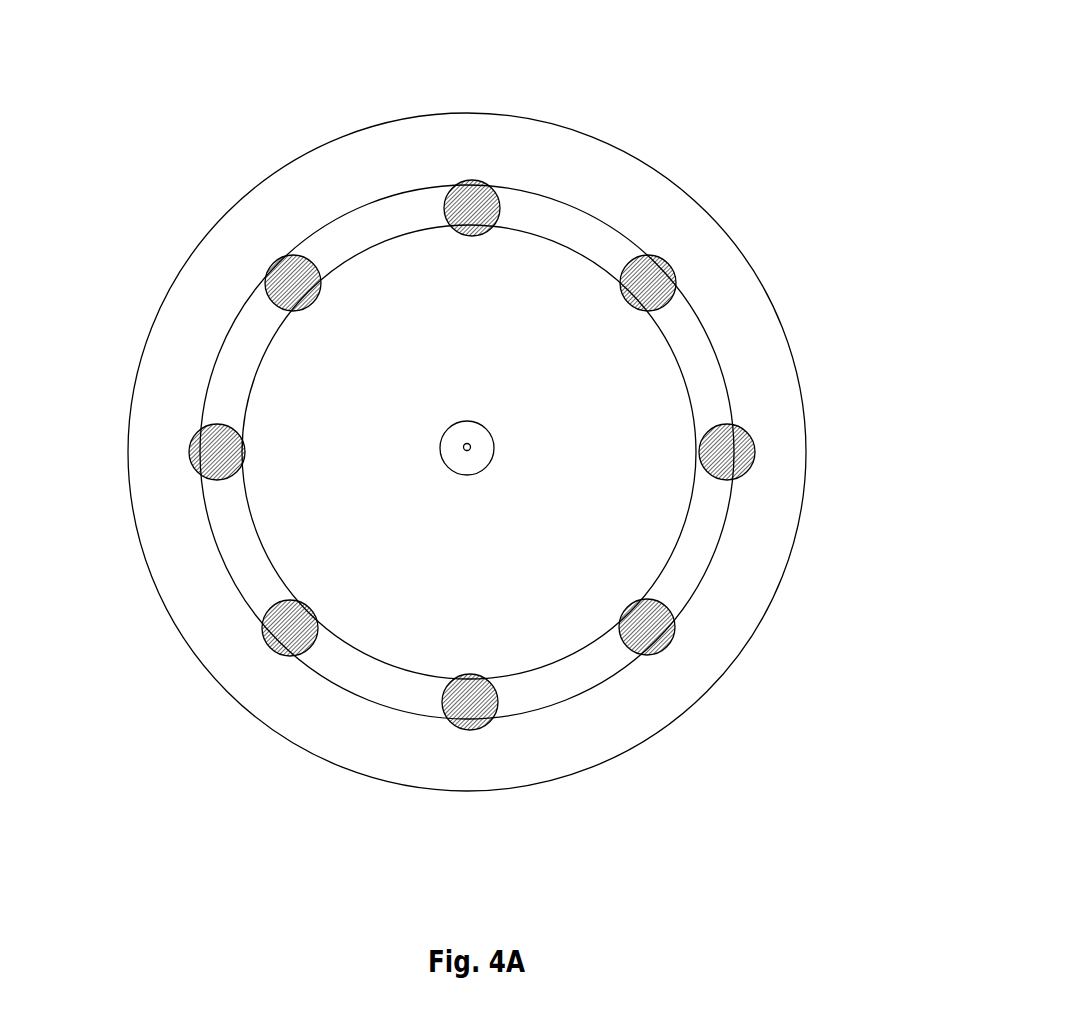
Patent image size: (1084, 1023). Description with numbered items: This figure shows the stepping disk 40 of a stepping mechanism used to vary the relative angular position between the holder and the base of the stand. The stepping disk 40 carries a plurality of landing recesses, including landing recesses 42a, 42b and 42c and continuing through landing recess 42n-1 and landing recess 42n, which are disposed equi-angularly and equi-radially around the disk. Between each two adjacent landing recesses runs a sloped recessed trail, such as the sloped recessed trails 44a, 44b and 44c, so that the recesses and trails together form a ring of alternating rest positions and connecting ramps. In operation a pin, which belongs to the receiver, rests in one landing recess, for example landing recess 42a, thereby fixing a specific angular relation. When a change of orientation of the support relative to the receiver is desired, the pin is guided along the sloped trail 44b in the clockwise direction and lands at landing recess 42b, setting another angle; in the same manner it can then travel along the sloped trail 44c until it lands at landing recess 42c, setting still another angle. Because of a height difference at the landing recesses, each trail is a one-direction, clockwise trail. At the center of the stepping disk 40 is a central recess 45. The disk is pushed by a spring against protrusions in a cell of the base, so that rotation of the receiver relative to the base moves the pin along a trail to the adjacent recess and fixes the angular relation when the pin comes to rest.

The stepping disk 40 is at (683, 180).
The landing recess 42a is at (668, 263).
The landing recess 42b is at (730, 443).
The landing recess 42c is at (653, 638).
The landing recess 42n is at (467, 195).
The landing recess 42n-1 is at (285, 270).
The sloped recessed trail 44a is at (556, 217).
The sloped recessed trail 44b is at (695, 345).
The sloped recessed trail 44c is at (703, 537).
The central recess 45 is at (455, 460).